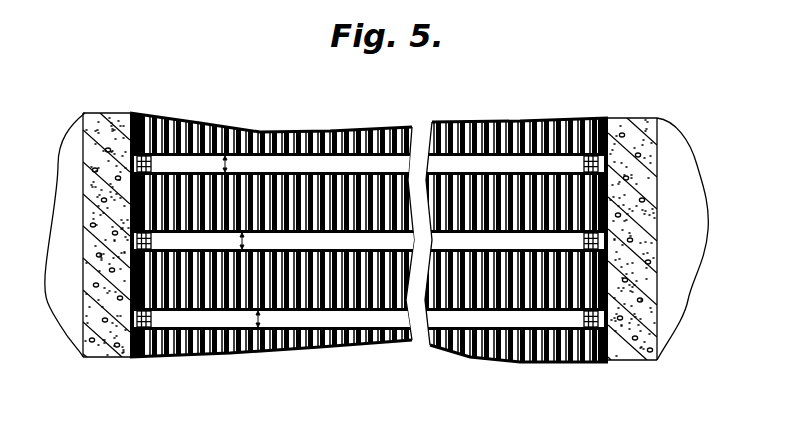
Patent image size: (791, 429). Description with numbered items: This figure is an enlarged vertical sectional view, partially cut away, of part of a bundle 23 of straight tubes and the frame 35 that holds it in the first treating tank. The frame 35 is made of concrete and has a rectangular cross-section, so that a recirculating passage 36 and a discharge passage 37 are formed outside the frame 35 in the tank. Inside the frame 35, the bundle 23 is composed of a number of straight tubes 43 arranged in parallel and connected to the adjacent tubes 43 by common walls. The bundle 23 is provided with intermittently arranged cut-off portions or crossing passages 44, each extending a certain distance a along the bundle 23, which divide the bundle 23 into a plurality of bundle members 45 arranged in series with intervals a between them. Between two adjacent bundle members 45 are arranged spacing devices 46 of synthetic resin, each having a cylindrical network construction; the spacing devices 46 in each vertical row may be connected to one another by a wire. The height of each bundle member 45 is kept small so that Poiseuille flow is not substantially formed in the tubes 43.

The bundle 23 is at (578, 246).
The frame 35 is at (97, 285).
The recirculating passage 36 is at (70, 182).
The discharge passage 37 is at (687, 202).
The straight tubes 43 is at (315, 137).
The crossing passages 44 is at (348, 168).
The bundle members 45 is at (505, 135).
The spacing devices 46 is at (137, 163).